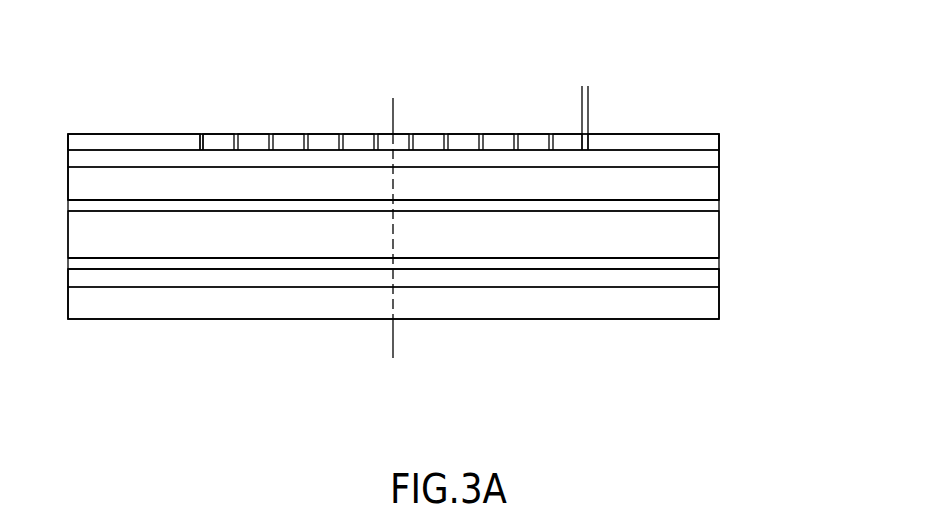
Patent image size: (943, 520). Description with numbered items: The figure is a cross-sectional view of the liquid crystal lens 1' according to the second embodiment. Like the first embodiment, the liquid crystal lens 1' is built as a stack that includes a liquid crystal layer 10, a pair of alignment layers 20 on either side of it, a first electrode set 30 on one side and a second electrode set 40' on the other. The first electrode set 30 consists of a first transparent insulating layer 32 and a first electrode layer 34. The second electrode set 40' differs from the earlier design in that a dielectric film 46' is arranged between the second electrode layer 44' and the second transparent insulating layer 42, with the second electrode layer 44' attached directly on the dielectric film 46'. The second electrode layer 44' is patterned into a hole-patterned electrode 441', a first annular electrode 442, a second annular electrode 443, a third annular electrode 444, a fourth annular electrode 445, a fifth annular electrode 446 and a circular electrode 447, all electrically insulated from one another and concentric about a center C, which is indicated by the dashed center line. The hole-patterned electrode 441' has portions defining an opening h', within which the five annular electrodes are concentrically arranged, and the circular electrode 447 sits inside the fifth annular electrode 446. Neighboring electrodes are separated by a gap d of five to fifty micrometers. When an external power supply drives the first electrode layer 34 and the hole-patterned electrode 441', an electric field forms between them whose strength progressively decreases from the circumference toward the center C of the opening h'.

The liquid crystal lens 1' is at (376, 173).
The liquid crystal layer 10 is at (702, 236).
The alignment layer 20 is at (702, 205).
The first electrode set 30 is at (628, 377).
The first transparent insulating layer 32 is at (577, 298).
The first electrode layer 34 is at (630, 278).
The second electrode set 40' is at (460, 153).
The second transparent insulating layer 42 is at (702, 184).
The second electrode layer 44' is at (430, 125).
The dielectric film 46' is at (430, 147).
The hole-patterned electrode 441' is at (134, 101).
The first annular electrode 442 is at (217, 133).
The second annular electrode 443 is at (253, 133).
The third annular electrode 444 is at (287, 133).
The fourth annular electrode 445 is at (322, 133).
The fifth annular electrode 446 is at (356, 133).
The circular electrode 447 is at (403, 133).
The opening h' is at (178, 96).
The gap d is at (615, 95).
The center C is at (393, 243).